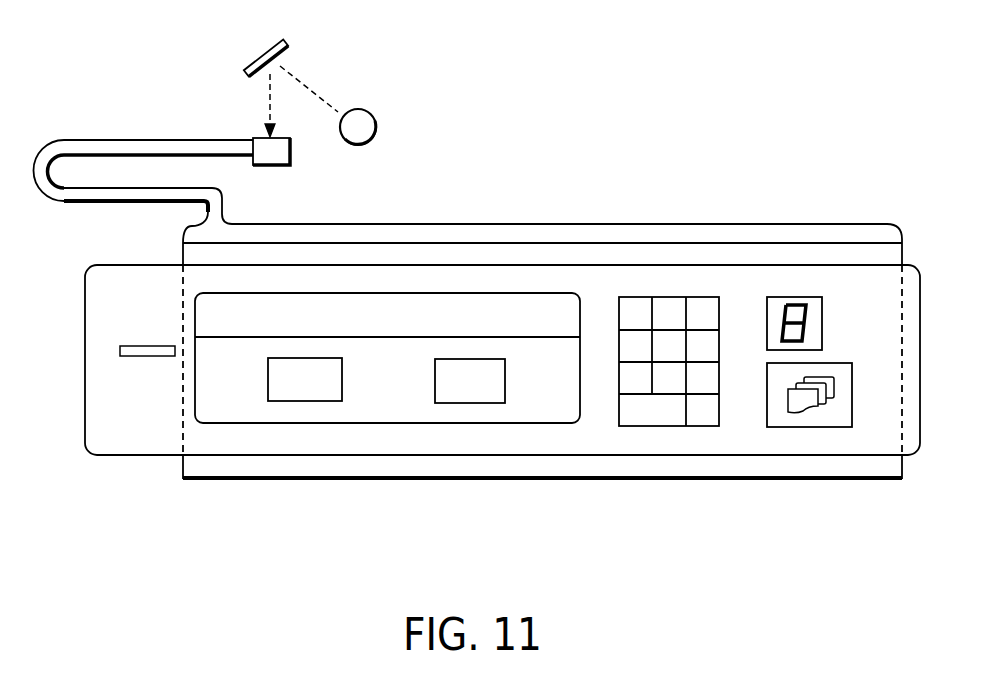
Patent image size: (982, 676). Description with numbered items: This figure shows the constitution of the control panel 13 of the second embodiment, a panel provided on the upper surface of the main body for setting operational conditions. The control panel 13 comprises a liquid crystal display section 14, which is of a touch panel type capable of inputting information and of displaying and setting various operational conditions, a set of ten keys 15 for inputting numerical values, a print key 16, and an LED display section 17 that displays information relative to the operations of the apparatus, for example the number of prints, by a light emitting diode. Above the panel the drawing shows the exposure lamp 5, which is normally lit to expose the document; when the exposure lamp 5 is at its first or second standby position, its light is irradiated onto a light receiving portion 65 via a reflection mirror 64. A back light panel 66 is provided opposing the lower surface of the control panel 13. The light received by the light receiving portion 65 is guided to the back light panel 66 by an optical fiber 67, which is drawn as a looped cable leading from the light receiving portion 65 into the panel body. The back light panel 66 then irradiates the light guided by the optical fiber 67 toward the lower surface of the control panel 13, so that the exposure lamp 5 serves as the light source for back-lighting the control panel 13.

The exposure lamp 5 is at (377, 127).
The control panel 13 is at (729, 272).
The liquid crystal display section 14 is at (530, 423).
The ten keys 15 is at (667, 426).
The print key 16 is at (811, 427).
The LED display section 17 is at (795, 297).
The reflection mirror 64 is at (256, 52).
The light receiving portion 65 is at (272, 165).
The back light panel 66 is at (290, 478).
The optical fiber 67 is at (183, 140).